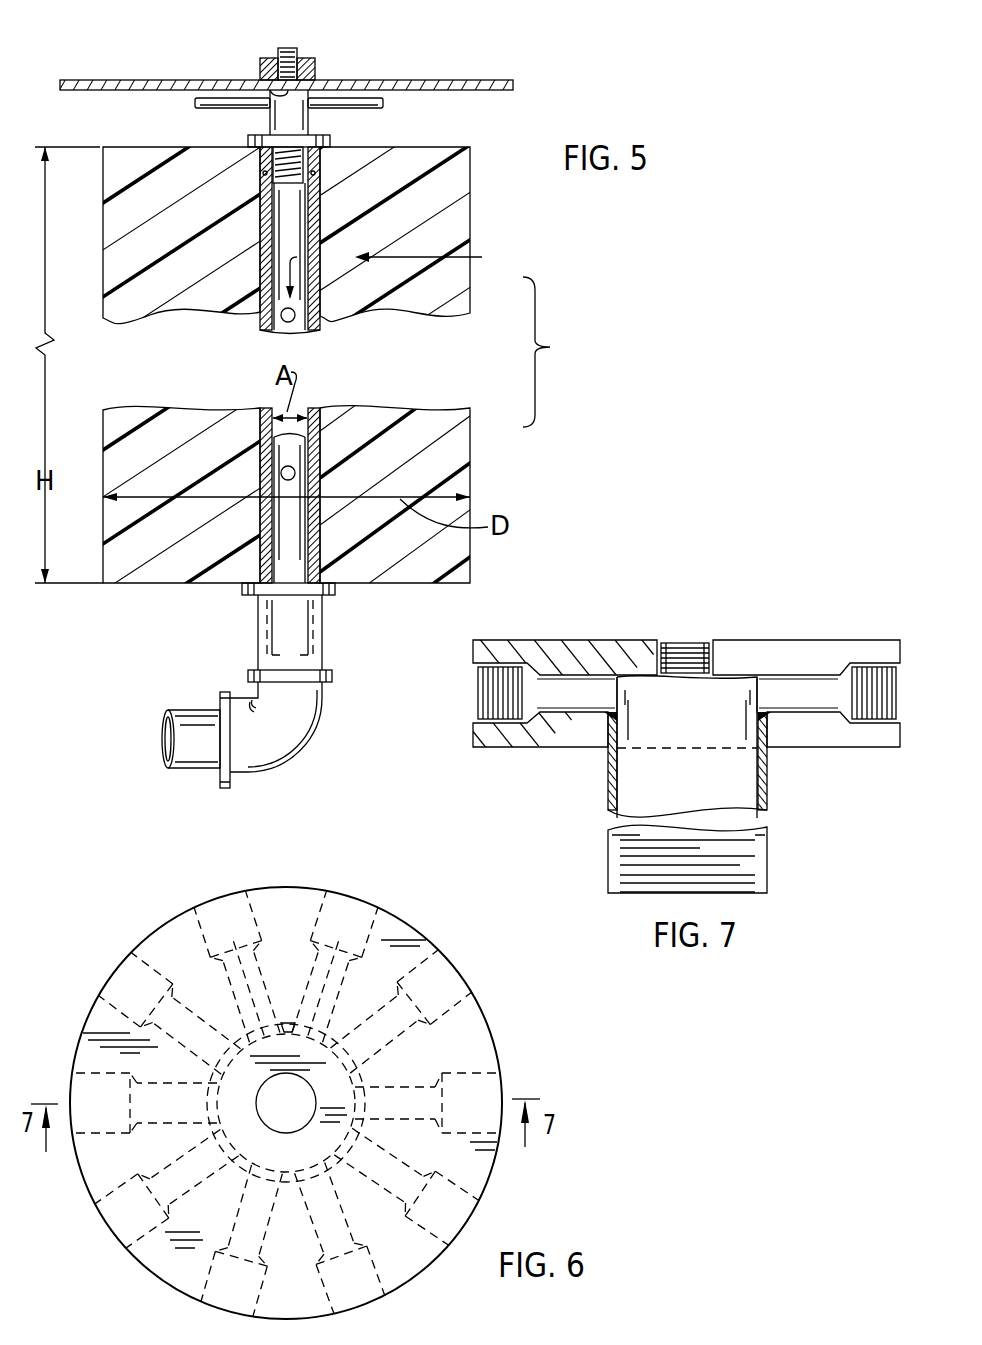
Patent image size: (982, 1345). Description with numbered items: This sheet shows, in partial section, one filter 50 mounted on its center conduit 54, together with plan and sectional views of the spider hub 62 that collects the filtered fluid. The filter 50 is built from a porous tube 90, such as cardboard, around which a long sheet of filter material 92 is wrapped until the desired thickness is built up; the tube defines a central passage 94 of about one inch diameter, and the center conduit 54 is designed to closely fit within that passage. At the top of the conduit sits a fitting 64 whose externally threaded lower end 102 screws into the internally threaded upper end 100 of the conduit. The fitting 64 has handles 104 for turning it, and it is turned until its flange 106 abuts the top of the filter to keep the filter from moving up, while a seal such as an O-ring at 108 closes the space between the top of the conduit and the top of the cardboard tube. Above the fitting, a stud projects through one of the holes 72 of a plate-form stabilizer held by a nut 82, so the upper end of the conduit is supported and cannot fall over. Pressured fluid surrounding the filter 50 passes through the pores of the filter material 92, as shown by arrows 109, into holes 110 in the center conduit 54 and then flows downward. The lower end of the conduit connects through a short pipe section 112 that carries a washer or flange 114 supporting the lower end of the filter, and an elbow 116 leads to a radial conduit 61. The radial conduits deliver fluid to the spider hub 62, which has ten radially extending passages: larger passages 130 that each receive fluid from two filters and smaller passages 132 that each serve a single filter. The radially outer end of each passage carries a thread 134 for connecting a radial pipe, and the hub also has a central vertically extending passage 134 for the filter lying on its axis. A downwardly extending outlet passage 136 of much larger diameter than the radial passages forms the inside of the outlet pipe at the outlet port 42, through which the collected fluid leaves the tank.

In FIG. 5, the nut 82 is at (281, 18).
In FIG. 5, the holes 72 is at (283, 90).
In FIG. 5, the fitting 64 is at (290, 105).
In FIG. 5, the handles 104 is at (373, 100).
In FIG. 5, the lower end 102 is at (270, 165).
In FIG. 5, the upper end 100 is at (260, 183).
In FIG. 5, the flange 106 is at (305, 160).
In FIG. 5, the O-ring 108 is at (331, 257).
In FIG. 5, the filter material 92 is at (470, 207).
In FIG. 5, the arrows 109 is at (482, 258).
In FIG. 5, the center conduit 54 is at (264, 329).
In FIG. 5, the holes 110 is at (296, 258).
In FIG. 5, the porous tube 90 is at (260, 410).
In FIG. 5, the central passage 94 is at (307, 410).
In FIG. 5, the filter 50 is at (470, 448).
In FIG. 5, the flange 114 is at (245, 593).
In FIG. 5, the short pipe section 112 is at (322, 658).
In FIG. 5, the elbow 116 is at (325, 695).
In FIG. 5, the radial conduit 61 is at (183, 710).
In FIG. 7, the spider hub 62 is at (572, 641).
In FIG. 6, the spider hub 62 is at (316, 886).
In FIG. 7, the thread 134 is at (708, 640).
In FIG. 7, the outlet passage 136 is at (745, 790).
In FIG. 7, the outlet port 42 is at (768, 805).
In FIG. 6, the larger passages 130 is at (388, 1050).
In FIG. 6, the smaller passages 132 is at (403, 1118).